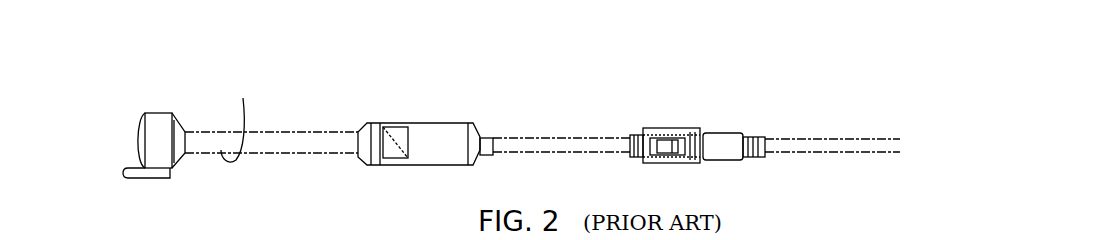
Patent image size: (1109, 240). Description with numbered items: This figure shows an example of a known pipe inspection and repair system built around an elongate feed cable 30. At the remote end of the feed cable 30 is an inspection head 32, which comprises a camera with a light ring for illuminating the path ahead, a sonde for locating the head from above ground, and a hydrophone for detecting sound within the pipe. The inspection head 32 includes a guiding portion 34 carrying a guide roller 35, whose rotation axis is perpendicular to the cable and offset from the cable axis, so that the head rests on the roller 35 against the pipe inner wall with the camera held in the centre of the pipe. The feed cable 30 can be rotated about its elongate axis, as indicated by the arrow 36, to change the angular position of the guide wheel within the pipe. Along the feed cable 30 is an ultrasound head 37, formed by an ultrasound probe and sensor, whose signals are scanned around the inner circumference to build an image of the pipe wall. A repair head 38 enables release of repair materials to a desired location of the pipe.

The feed cable 30 is at (822, 125).
The inspection head 32 is at (145, 112).
The guiding portion 34 is at (158, 94).
The guide roller 35 is at (128, 197).
The arrow 36 is at (243, 92).
The ultrasound head 37 is at (425, 110).
The repair head 38 is at (703, 108).